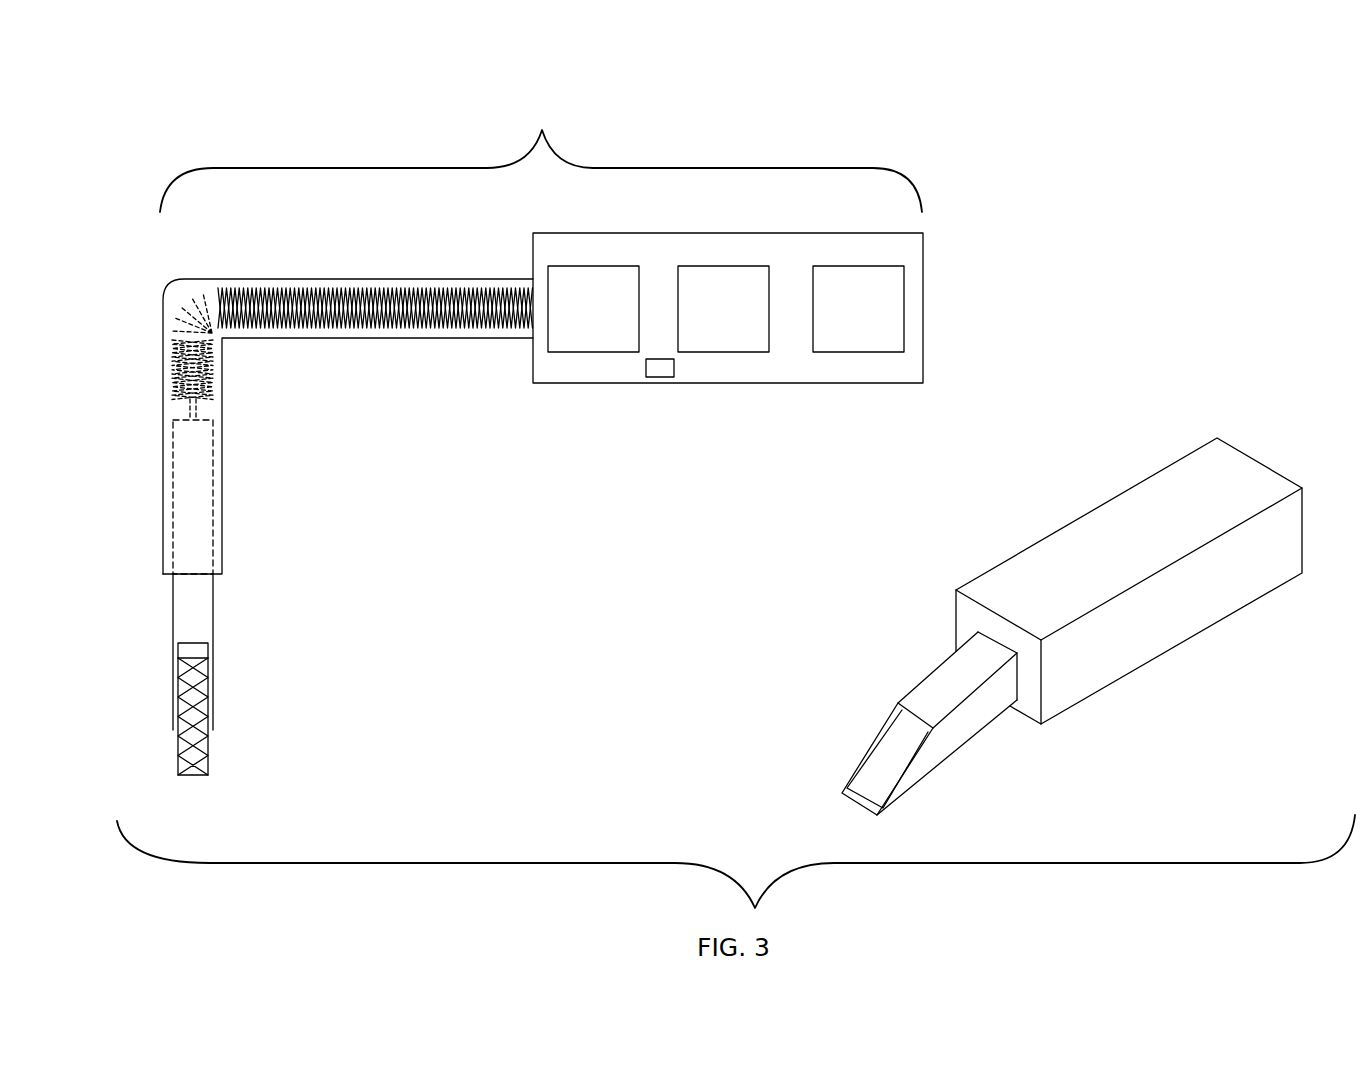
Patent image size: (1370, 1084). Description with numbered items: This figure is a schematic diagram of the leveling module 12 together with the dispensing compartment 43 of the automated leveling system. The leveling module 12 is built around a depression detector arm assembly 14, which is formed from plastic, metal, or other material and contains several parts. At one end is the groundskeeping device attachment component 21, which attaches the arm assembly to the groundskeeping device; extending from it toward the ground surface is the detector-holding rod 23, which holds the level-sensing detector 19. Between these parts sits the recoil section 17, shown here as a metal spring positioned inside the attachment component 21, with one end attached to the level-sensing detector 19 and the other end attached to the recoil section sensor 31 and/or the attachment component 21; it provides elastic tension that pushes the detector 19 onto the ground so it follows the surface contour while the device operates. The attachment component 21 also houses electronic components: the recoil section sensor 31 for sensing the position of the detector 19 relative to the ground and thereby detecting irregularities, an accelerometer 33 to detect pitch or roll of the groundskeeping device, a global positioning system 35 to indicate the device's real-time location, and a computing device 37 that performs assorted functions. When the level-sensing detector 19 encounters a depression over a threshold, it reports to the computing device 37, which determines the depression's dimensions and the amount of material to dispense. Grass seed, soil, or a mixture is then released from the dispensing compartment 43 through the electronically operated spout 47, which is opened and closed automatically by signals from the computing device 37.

The leveling module 12 is at (343, 92).
The depression detector arm assembly 14 is at (541, 413).
The recoil section 17 is at (395, 328).
The level-sensing detector 19 is at (212, 752).
The groundskeeping device attachment component 21 is at (871, 394).
The detector-holding rod 23 is at (213, 513).
The recoil section sensor 31 is at (591, 265).
The accelerometer 33 is at (723, 265).
The global positioning system 35 is at (660, 371).
The computing device 37 is at (858, 265).
The dispensing compartment 43 is at (1110, 493).
The electronically operated spout 47 is at (899, 689).